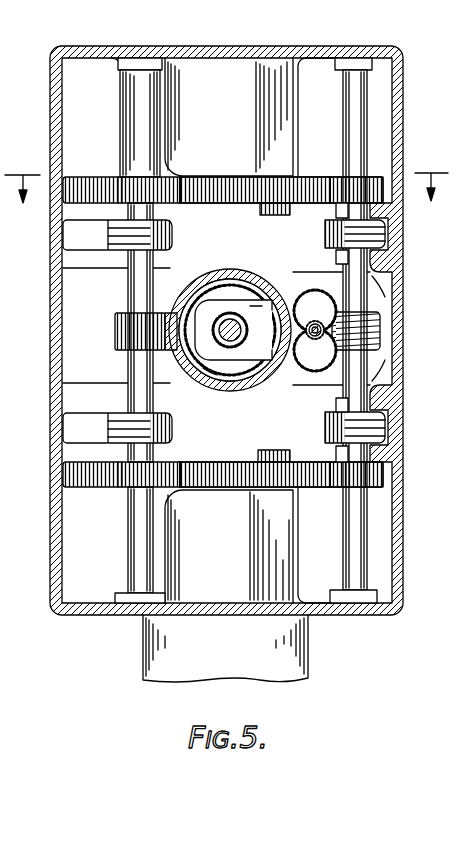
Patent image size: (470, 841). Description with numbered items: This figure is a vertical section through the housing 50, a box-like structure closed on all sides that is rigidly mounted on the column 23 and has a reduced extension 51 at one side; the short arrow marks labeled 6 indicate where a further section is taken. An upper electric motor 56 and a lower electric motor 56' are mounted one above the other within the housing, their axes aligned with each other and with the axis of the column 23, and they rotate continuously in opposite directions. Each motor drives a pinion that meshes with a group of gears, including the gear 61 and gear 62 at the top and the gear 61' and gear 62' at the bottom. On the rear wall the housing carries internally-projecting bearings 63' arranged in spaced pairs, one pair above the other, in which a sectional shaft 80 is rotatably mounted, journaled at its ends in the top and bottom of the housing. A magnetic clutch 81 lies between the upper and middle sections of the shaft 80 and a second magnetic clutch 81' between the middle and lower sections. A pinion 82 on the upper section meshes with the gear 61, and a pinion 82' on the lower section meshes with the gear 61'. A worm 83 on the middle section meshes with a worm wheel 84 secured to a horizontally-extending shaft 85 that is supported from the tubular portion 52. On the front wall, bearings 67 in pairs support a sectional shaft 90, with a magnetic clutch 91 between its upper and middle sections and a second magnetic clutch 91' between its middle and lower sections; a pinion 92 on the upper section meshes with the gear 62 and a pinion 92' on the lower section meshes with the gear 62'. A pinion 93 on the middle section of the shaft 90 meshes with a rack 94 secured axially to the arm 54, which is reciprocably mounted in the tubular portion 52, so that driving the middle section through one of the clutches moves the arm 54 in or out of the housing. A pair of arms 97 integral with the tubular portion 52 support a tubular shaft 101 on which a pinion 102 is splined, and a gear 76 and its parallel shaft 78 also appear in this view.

The section line 6 is at (226, 205).
The column 23 is at (292, 647).
The housing 50 is at (403, 366).
The reduced extension 51 is at (385, 297).
The tubular portion 52 is at (227, 391).
The arm 54 is at (251, 380).
The upper electric motor 56 is at (224, 103).
The lower electric motor 56' is at (251, 563).
The gear 61 is at (255, 203).
The gear 61' is at (255, 463).
The gear 62 is at (223, 178).
The gear 62' is at (223, 489).
The bearings 63' is at (323, 332).
The bearings 67 is at (93, 213).
The gear 76 is at (298, 292).
The shaft 78 is at (241, 338).
The sectional shaft 80 is at (353, 132).
The magnetic clutch 81 is at (340, 234).
The second magnetic clutch 81' is at (338, 427).
The pinion 82 is at (346, 178).
The pinion 82' is at (345, 489).
The worm 83 is at (380, 337).
The worm wheel 84 is at (315, 350).
The shaft 85 is at (315, 314).
The sectional shaft 90 is at (137, 100).
The magnetic clutch 91 is at (154, 235).
The second magnetic clutch 91' is at (154, 429).
The pinion 92 is at (108, 169).
The pinion 92' is at (115, 496).
The pinion 93 is at (116, 332).
The rack 94 is at (168, 313).
The arms 97 is at (258, 306).
The tubular shaft 101 is at (244, 333).
The pinion 102 is at (217, 372).